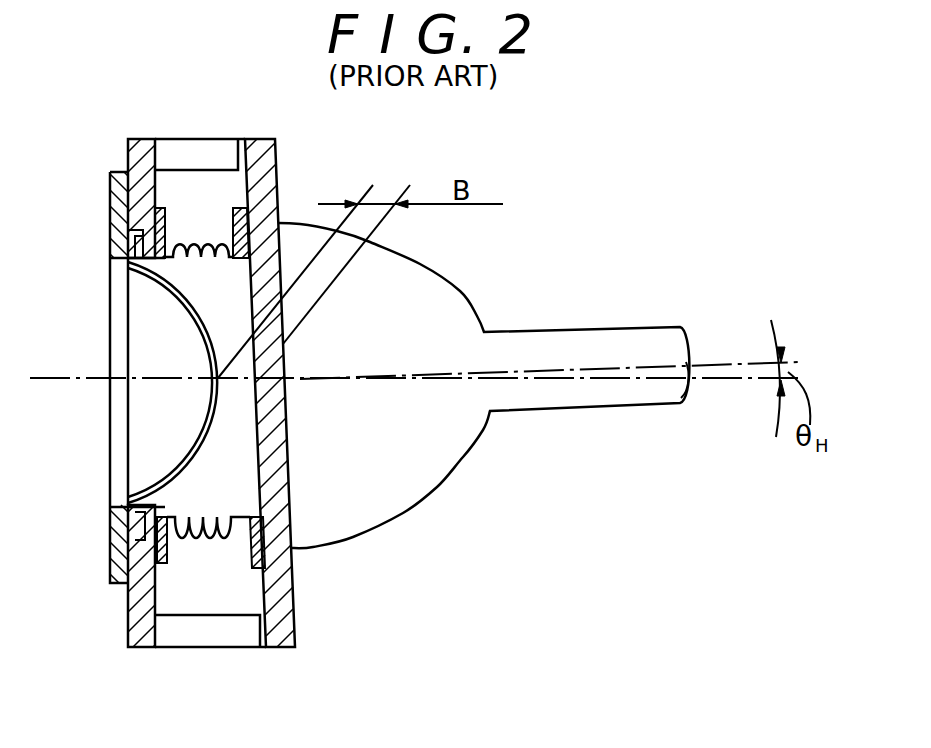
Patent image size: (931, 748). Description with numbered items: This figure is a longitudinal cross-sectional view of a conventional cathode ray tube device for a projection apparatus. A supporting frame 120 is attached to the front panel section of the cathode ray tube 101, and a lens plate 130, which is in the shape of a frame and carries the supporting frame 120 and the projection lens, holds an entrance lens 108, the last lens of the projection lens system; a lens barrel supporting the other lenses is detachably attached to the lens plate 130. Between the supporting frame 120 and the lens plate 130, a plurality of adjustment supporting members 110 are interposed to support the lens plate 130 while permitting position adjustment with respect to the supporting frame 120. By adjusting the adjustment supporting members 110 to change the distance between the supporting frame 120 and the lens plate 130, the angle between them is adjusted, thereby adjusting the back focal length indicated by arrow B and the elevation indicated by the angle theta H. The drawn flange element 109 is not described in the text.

The cathode ray tube 101 is at (453, 430).
The entrance lens 108 is at (160, 458).
The lens holder flange 109 is at (120, 555).
The adjustment supporting members 110 is at (217, 152).
The supporting frame 120 is at (287, 612).
The lens plate 130 is at (138, 620).